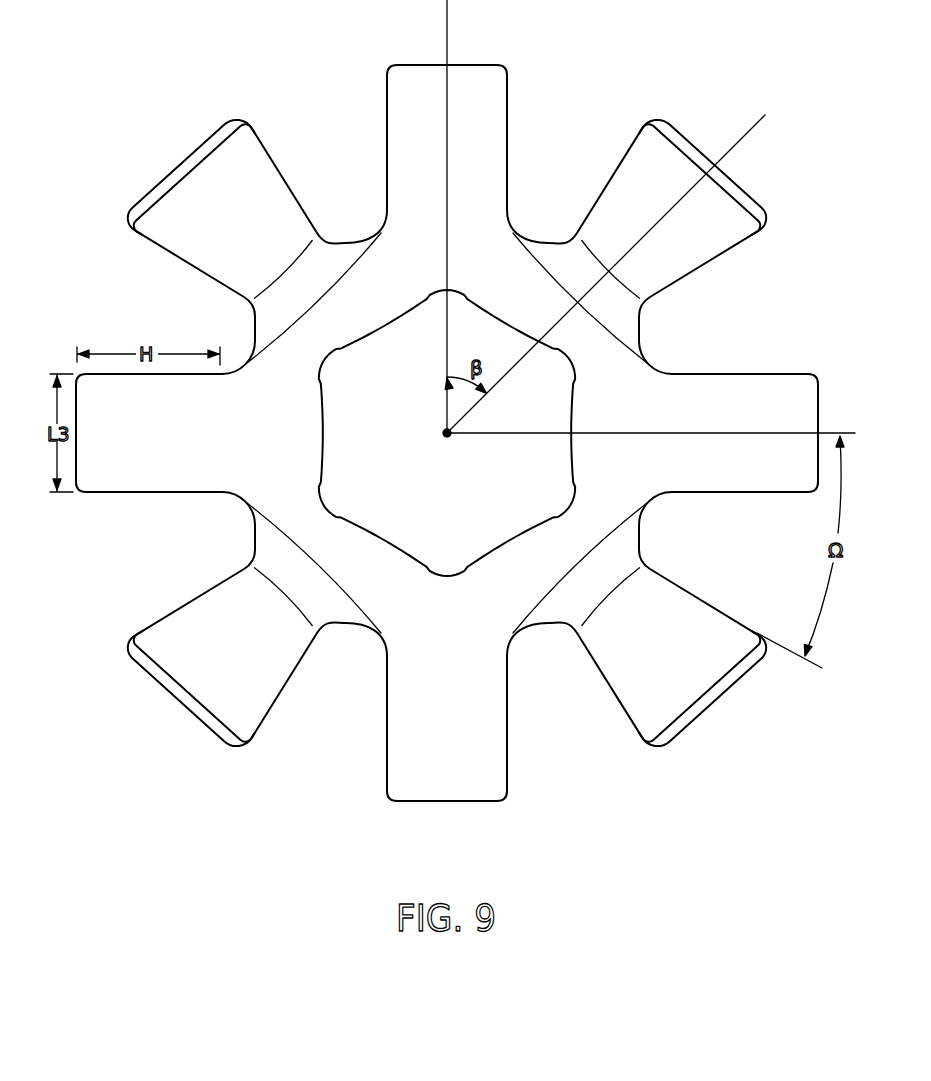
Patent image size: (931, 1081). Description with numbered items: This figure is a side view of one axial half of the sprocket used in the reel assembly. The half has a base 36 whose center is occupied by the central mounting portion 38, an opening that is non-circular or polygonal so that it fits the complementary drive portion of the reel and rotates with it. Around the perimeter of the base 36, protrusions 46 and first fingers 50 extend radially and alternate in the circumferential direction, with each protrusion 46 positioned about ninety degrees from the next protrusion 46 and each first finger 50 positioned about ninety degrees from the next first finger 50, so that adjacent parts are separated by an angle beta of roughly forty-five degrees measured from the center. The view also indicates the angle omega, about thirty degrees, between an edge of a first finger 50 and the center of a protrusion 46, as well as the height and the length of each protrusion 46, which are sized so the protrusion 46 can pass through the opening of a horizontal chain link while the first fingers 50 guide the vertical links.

The base 36 is at (518, 575).
The central mounting portion 38 is at (572, 432).
The protrusion 46 is at (500, 129).
The first finger 50 is at (280, 178).